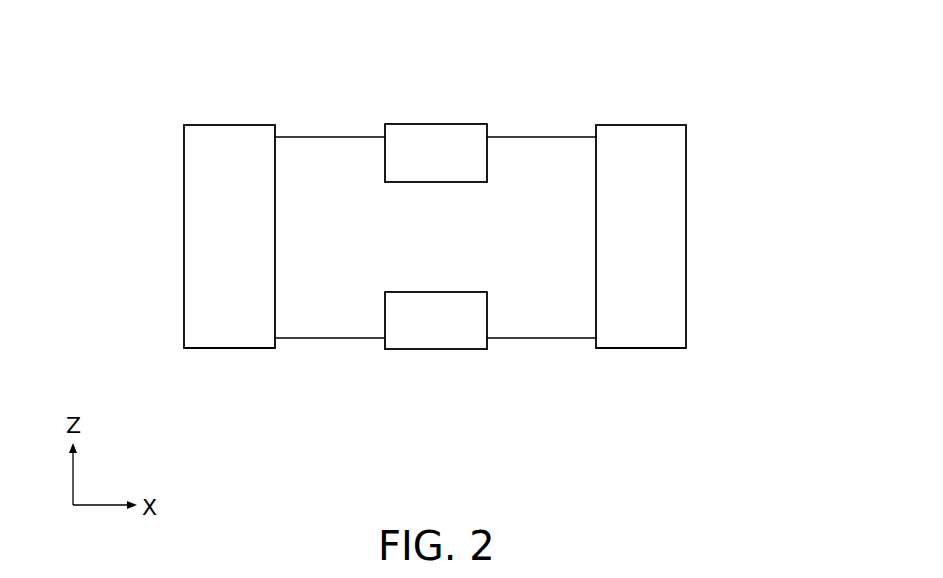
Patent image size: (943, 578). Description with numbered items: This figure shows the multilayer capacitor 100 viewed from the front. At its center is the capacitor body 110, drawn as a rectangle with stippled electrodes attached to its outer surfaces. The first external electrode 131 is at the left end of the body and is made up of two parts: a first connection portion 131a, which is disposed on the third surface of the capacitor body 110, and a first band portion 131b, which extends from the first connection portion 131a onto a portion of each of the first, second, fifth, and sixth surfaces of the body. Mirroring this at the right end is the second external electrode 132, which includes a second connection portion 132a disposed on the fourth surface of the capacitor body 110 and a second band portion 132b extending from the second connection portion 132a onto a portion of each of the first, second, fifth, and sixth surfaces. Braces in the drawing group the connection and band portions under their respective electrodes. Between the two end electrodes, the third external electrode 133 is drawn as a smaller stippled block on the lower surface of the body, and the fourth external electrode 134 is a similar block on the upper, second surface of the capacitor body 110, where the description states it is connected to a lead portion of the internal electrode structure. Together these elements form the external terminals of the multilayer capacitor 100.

The multilayer capacitor 100 is at (185, 36).
The capacitor body 110 is at (531, 155).
The first external electrode 131 is at (88, 313).
The first connection portion 131a is at (184, 330).
The first band portion 131b is at (200, 349).
The second external electrode 132 is at (782, 313).
The second connection portion 132a is at (686, 330).
The second band portion 132b is at (672, 349).
The third external electrode 133 is at (433, 345).
The fourth external electrode 134 is at (433, 130).